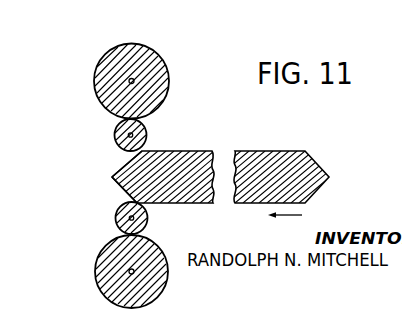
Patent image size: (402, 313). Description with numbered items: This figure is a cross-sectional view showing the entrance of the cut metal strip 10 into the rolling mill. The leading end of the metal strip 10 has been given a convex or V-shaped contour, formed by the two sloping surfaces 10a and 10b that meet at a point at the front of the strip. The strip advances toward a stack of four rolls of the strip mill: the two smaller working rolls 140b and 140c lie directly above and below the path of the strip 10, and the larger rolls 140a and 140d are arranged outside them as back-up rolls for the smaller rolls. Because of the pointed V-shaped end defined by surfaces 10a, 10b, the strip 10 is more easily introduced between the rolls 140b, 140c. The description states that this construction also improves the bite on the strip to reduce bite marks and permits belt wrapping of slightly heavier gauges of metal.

The metal strip 10 is at (205, 146).
The convex contour surface 10a is at (116, 166).
The convex contour surface 10b is at (114, 187).
The back-up roll 140a is at (157, 58).
The roll 140b is at (115, 130).
The roll 140c is at (148, 217).
The back-up roll 140d is at (106, 268).